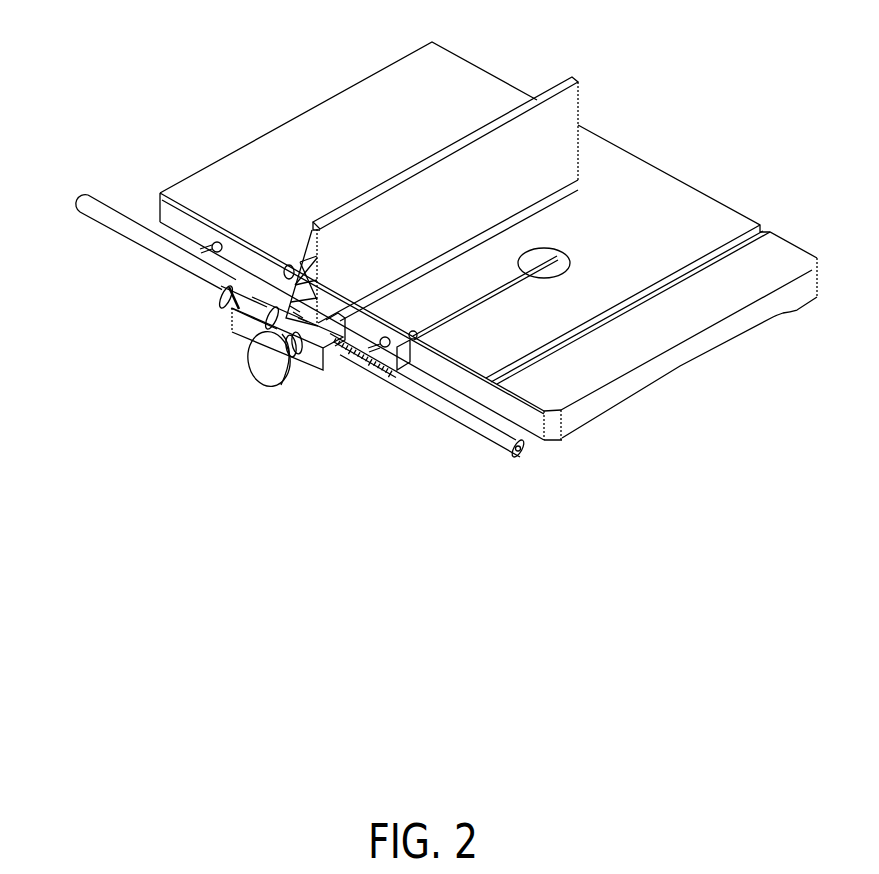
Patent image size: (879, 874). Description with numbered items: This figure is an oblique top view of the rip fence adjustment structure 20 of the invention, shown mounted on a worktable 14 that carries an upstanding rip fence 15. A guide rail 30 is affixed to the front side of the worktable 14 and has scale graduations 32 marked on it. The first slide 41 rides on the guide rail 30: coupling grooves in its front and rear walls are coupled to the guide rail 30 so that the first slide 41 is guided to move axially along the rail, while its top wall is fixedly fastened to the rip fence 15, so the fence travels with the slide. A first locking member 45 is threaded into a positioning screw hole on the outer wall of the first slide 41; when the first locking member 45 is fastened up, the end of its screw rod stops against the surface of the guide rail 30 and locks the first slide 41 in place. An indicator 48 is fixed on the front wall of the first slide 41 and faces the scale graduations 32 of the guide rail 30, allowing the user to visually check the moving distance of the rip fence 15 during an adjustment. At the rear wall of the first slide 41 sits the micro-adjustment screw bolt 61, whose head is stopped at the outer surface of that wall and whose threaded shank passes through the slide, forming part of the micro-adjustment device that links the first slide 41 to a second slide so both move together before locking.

The worktable 14 is at (673, 207).
The rip fence 15 is at (533, 142).
The rip fence adjustment structure 20 is at (83, 177).
The guide rail 30 is at (482, 427).
The scale graduations 32 is at (391, 370).
The first slide 41 is at (230, 346).
The first locking member 45 is at (258, 392).
The indicator 48 is at (337, 362).
The micro-adjustment screw bolt 61 is at (205, 308).